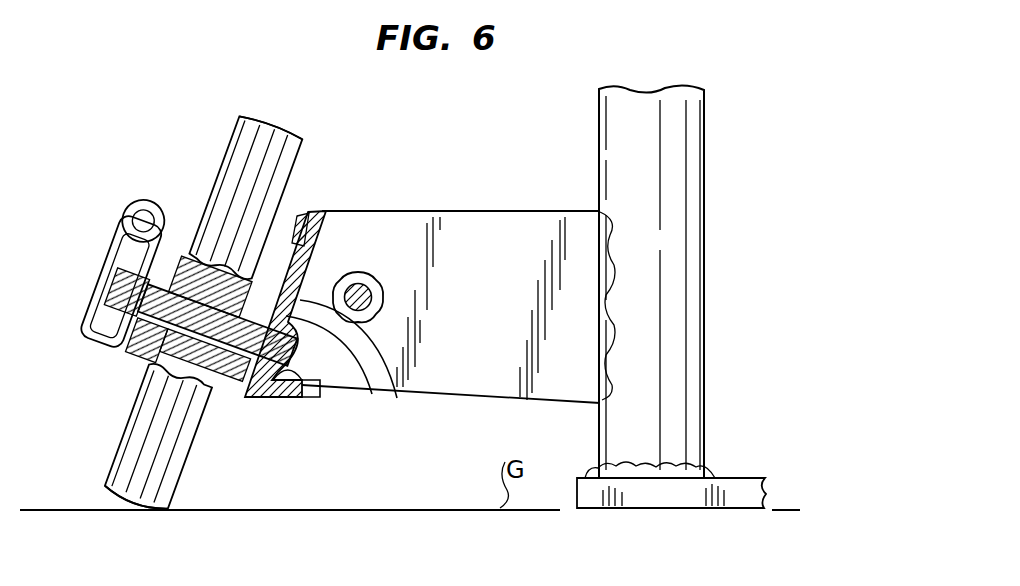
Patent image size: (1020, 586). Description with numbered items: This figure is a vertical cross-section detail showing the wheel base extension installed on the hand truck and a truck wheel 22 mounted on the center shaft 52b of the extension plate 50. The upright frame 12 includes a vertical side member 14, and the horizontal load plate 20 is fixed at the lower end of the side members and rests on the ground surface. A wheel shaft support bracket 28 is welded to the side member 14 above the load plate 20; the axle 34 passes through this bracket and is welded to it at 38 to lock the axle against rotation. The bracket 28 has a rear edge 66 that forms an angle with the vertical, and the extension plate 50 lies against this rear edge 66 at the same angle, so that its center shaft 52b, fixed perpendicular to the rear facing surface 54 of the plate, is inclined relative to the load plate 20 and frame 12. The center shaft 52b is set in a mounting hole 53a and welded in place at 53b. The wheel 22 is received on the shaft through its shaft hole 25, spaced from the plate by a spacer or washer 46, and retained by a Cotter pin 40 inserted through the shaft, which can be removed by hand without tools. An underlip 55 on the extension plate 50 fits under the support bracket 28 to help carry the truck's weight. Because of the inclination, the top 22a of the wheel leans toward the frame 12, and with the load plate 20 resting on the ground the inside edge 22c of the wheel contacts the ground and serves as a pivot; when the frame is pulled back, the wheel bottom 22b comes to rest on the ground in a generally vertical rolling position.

The upright frame 12 is at (706, 140).
The vertical side member 14 is at (708, 268).
The load plate 20 is at (745, 478).
The truck wheel 22 is at (204, 198).
The top of the wheel 22a is at (260, 114).
The bottom of the wheel 22b is at (137, 465).
The inside edge of the wheel 22c is at (159, 529).
The shaft hole 25 is at (155, 346).
The wheel shaft support bracket 28 is at (492, 226).
The axle 34 is at (383, 290).
The weld 38 is at (385, 316).
The Cotter pin 40 is at (100, 258).
The spacer or washer 46 is at (236, 362).
The wheel base extension plate 50 is at (331, 210).
The center shaft 52b is at (272, 292).
The mounting hole 53a is at (310, 340).
The weld 53b is at (290, 334).
The rear facing surface 54 is at (311, 228).
The underlip 55 is at (310, 380).
The rear edge 66 is at (333, 213).